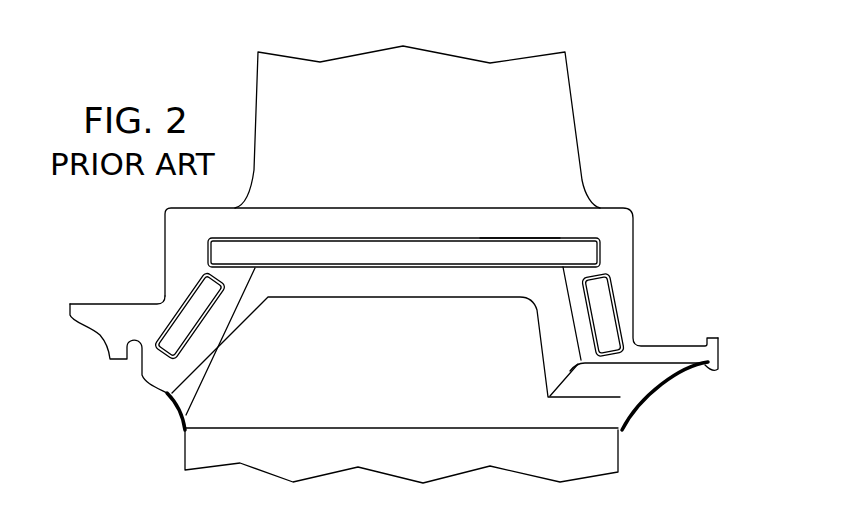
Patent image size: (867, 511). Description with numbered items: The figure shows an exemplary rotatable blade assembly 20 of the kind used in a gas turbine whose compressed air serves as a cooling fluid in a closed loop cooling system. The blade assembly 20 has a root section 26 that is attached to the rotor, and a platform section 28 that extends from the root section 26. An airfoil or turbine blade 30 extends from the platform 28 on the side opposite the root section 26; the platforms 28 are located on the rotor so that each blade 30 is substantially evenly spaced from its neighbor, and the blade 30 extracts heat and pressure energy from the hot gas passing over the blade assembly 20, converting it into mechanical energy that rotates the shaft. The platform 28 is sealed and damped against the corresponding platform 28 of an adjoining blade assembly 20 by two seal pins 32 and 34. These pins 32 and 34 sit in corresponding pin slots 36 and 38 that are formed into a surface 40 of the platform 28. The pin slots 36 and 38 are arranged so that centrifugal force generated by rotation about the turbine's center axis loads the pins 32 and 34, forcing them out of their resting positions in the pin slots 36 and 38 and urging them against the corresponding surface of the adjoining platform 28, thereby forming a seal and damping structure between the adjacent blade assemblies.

The rotatable blade assembly 20 is at (612, 128).
The root section 26 is at (477, 331).
The platform section 28 is at (633, 256).
The turbine blade 30 is at (333, 148).
The seal pin 32 is at (492, 252).
The seal pin 34 is at (178, 325).
The pin slot 36 is at (510, 240).
The pin slot 38 is at (188, 298).
The surface 40 is at (370, 223).